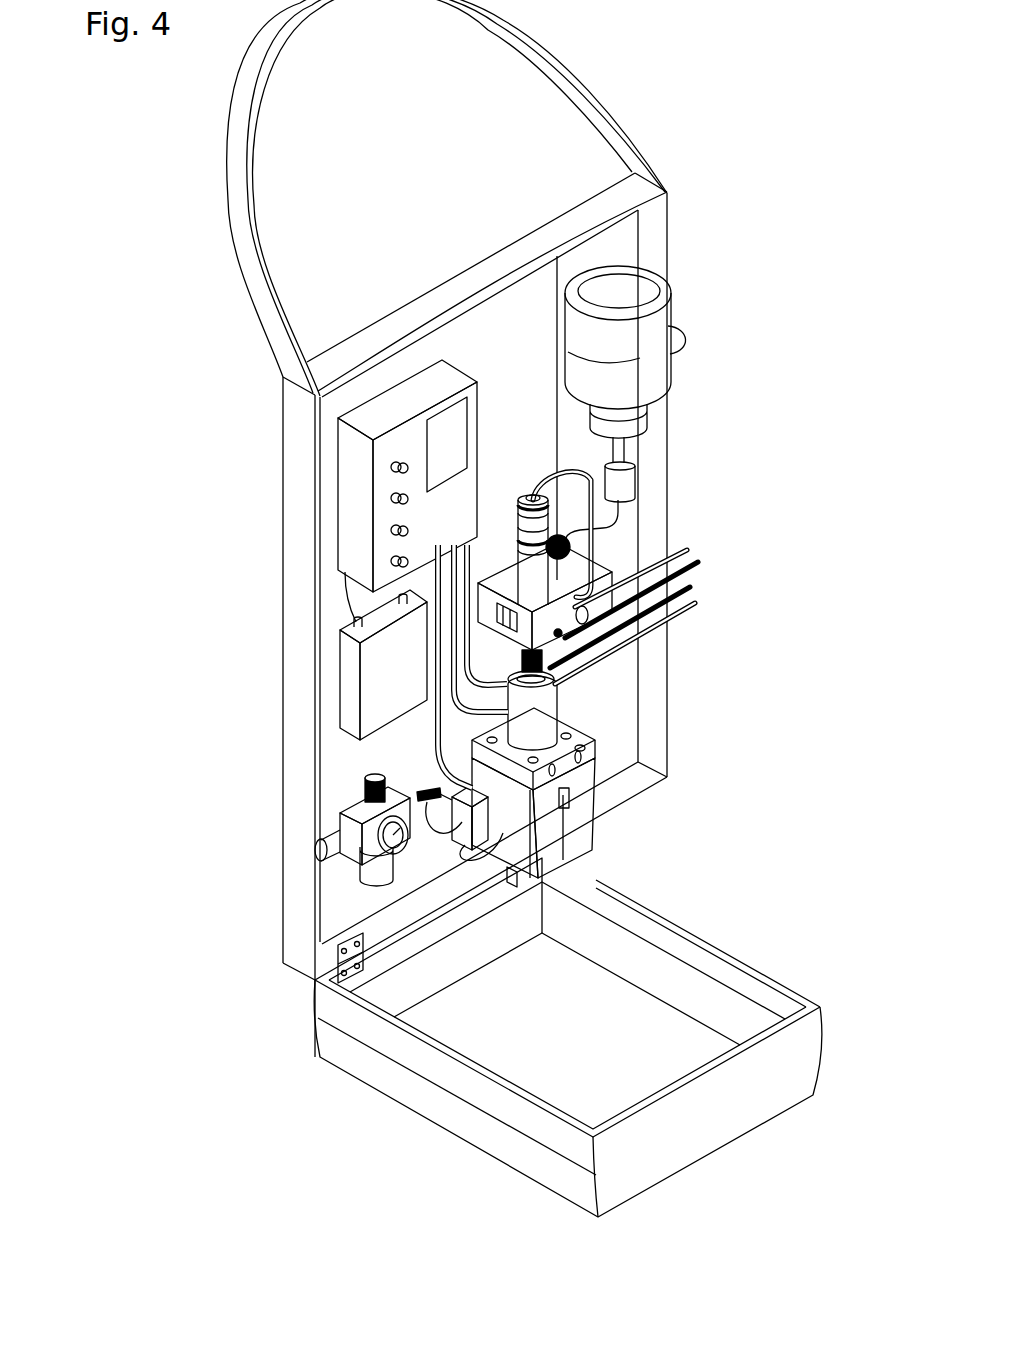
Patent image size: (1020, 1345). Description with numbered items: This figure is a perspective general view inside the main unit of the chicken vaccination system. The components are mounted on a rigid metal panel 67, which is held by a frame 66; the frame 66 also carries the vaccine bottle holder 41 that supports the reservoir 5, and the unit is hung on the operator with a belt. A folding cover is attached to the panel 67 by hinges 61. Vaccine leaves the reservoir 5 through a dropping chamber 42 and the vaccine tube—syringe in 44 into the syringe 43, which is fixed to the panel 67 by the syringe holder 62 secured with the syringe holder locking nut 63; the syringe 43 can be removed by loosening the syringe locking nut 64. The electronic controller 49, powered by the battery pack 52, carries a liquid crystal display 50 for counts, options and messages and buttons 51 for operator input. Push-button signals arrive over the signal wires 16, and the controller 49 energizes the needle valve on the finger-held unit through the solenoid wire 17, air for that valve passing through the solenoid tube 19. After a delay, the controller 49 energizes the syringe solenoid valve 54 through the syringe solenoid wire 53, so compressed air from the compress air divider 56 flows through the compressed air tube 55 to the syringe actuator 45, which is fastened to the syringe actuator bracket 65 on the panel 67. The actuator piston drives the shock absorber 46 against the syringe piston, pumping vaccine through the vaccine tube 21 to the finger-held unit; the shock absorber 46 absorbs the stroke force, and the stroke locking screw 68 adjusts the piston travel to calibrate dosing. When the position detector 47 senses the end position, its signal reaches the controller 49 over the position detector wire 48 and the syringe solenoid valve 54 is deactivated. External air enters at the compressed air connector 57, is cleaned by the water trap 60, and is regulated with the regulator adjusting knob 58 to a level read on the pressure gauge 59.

The reservoir 5 is at (652, 338).
The vaccine bottle holder 41 is at (637, 363).
The dropping chamber 42 is at (622, 482).
The syringe 43 is at (540, 562).
The vaccine tube—syringe in 44 is at (565, 538).
The vaccine tube 21 is at (688, 548).
The signal wires 16 is at (700, 563).
The solenoid wire 17 is at (693, 587).
The solenoid tube 19 is at (697, 603).
The syringe holder 62 is at (520, 620).
The syringe holder locking nut 63 is at (562, 635).
The syringe locking nut 64 is at (547, 650).
The shock absorber 46 is at (552, 713).
The syringe actuator bracket 65 is at (583, 742).
The position detector wire 48 is at (598, 792).
The position detector 47 is at (566, 800).
The syringe actuator 45 is at (594, 822).
The syringe solenoid valve 54 is at (482, 812).
The compressed air tube 55 is at (520, 880).
The compress air divider 56 is at (427, 797).
The controller 49 is at (352, 455).
The liquid crystal display (LCD) 50 is at (445, 420).
The buttons 51 is at (390, 468).
The battery pack 52 is at (345, 678).
The syringe solenoid wire 53 is at (434, 747).
The regulator adjusting knob 58 is at (362, 795).
The compressed air connector 57 is at (316, 850).
The water trap 60 is at (355, 870).
The pressure gauge 59 is at (283, 957).
The hinges 61 is at (377, 955).
The frame 66 is at (500, 257).
The panel 67 is at (450, 320).
The stroke locking screw 68 is at (495, 1142).